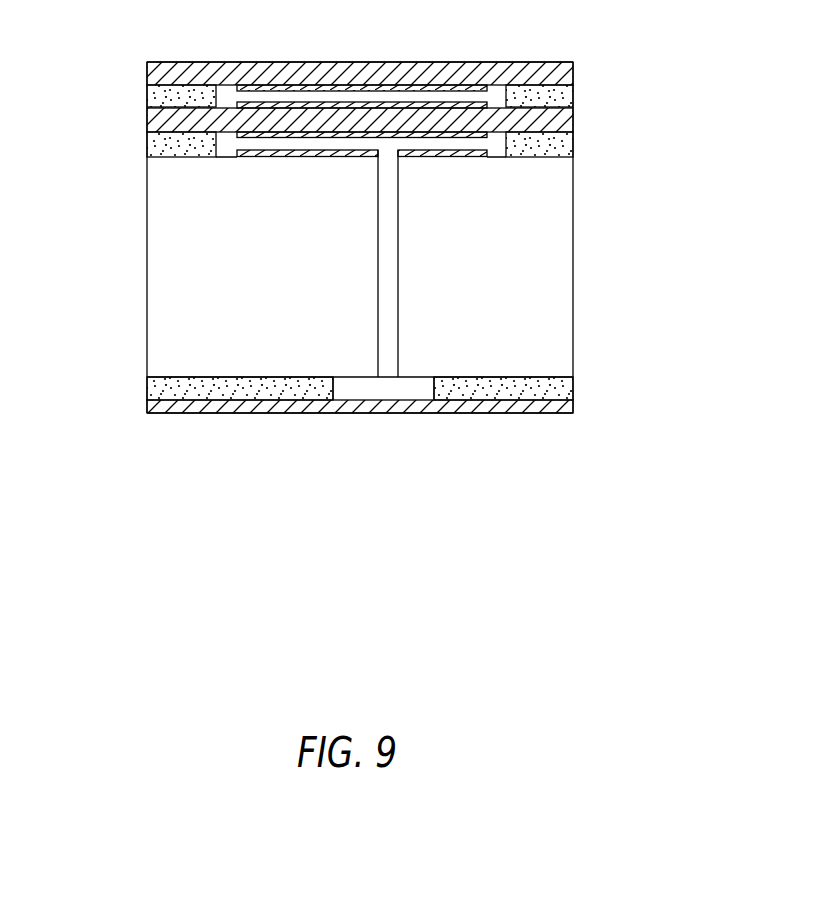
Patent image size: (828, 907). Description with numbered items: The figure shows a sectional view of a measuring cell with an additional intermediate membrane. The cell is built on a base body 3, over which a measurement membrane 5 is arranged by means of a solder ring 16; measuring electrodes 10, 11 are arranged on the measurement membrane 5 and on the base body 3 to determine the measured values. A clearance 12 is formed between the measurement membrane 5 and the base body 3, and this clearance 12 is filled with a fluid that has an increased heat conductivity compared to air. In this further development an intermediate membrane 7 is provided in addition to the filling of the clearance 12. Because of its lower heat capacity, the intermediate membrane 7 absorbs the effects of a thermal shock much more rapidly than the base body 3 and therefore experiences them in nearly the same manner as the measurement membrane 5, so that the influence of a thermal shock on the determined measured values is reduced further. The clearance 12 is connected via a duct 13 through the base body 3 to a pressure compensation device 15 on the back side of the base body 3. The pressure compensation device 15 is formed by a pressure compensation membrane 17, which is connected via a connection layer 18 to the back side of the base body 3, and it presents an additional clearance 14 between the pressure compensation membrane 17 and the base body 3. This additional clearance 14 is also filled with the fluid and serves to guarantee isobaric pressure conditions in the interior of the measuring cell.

The base body 3 is at (252, 275).
The measurement membrane 5 is at (535, 67).
The intermediate membrane 7 is at (157, 123).
The measuring electrode 10 is at (290, 88).
The measuring electrode 11 is at (353, 100).
The clearance 12 is at (417, 98).
The duct 13 is at (388, 237).
The additional clearance 14 is at (402, 392).
The pressure compensation device 15 is at (602, 376).
The solder ring 16 is at (572, 145).
The pressure compensation membrane 17 is at (342, 400).
The connection layer 18 is at (155, 353).